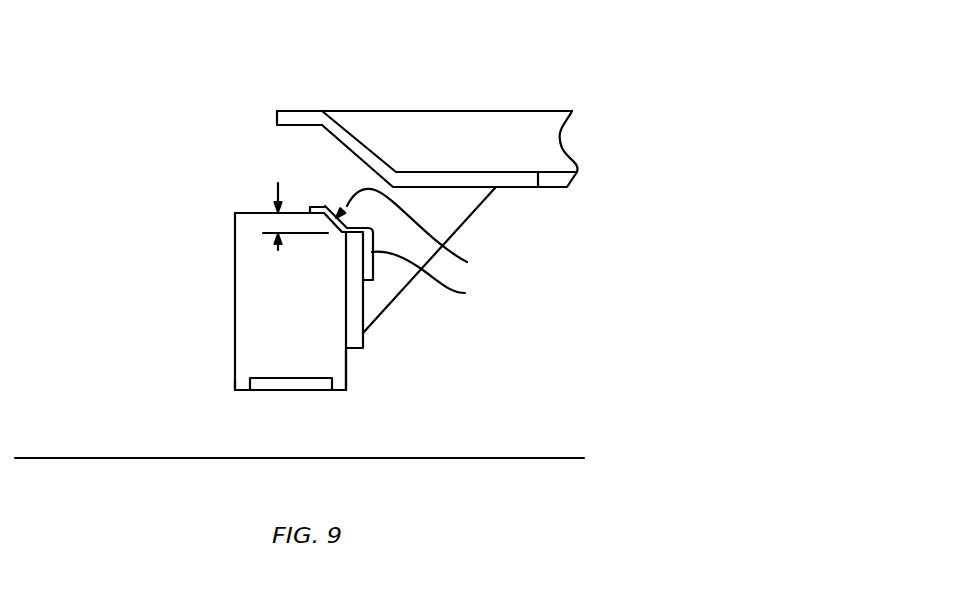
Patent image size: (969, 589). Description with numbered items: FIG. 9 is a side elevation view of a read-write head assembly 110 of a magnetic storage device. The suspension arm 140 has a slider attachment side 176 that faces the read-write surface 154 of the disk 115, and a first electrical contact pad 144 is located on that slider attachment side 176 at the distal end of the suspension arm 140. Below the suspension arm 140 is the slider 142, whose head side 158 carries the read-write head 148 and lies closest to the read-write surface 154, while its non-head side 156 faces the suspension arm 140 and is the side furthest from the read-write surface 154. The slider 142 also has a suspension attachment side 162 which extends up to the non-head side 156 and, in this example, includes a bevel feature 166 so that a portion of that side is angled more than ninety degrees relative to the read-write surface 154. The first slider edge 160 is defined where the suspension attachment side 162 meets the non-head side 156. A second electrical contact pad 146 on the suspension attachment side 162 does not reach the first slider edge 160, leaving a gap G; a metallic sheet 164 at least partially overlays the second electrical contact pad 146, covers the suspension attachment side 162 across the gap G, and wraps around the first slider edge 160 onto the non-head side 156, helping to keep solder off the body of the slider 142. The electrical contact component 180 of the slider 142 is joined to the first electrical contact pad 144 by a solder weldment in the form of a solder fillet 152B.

The vehicle structure assembly 110 is at (555, 68).
The suspension arm 140 is at (440, 133).
The first electrical contact pad 144 is at (332, 122).
The slider attachment side 176 is at (538, 190).
The solder fillet 152B is at (430, 210).
The bevel feature 166 is at (419, 233).
The metallic sheet 164 is at (436, 280).
The second electrical contact pad 146 is at (357, 320).
The electrical contact component 180 is at (372, 353).
The first slider edge 160 is at (330, 204).
The slider 142 is at (247, 331).
The suspension attachment side 162 is at (347, 372).
The read-write head 148 is at (299, 384).
The head side 158 is at (238, 393).
The non-head side 156 is at (252, 213).
The gap G is at (278, 188).
The read-write surface 154 is at (472, 457).
The disk 115 is at (538, 480).